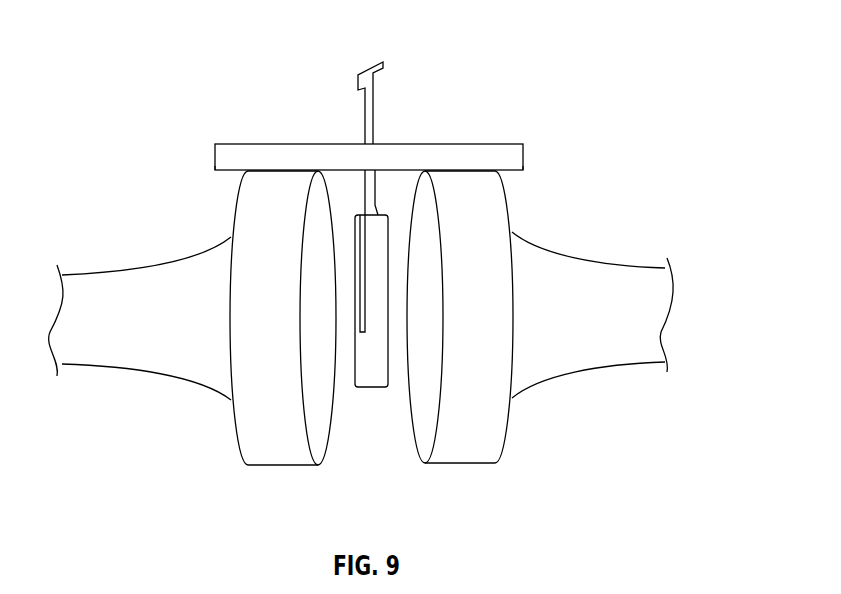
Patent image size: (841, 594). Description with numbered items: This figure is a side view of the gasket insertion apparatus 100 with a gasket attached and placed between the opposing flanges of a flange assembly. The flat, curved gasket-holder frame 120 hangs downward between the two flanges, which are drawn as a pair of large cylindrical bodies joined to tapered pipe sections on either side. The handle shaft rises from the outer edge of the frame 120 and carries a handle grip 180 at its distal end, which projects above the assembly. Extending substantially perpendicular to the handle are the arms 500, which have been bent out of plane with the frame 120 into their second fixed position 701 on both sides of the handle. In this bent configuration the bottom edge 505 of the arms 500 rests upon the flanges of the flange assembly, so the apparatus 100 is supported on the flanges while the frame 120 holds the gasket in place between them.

The gasket insertion apparatus 100 is at (141, 63).
The second fixed position 701 is at (252, 122).
The arms 500 is at (220, 158).
The bottom edge 505 is at (222, 173).
The handle grip 180 is at (383, 73).
The gasket-holder frame 120 is at (363, 283).